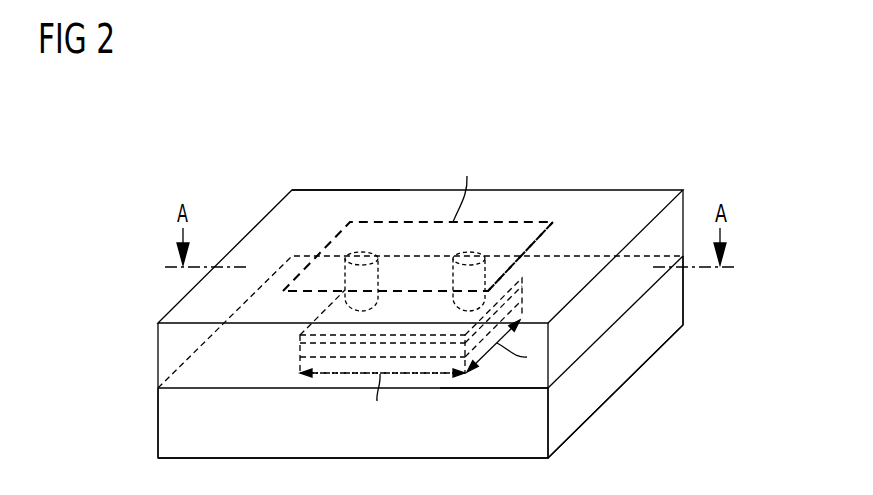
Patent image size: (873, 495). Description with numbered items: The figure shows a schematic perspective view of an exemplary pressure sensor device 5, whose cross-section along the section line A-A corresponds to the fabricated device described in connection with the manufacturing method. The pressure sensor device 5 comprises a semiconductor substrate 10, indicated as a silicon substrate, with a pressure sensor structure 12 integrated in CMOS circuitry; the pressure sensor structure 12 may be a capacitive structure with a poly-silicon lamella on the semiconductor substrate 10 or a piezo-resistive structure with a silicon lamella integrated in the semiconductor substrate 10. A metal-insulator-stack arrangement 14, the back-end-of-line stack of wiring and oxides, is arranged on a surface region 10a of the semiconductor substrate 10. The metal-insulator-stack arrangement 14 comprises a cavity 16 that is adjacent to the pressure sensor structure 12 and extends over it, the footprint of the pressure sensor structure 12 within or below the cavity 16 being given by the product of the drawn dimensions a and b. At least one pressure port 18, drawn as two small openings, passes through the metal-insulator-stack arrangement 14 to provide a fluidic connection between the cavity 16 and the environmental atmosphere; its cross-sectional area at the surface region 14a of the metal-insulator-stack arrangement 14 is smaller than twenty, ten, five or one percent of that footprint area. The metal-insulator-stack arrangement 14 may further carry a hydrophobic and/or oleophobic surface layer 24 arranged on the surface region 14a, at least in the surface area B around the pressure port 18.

The pressure sensor device 5 is at (142, 110).
The semiconductor substrate 10 is at (742, 258).
The surface region of the semiconductor substrate 10a is at (538, 378).
The pressure sensor structure 12 is at (249, 364).
The metal-insulator-stack arrangement 14 is at (186, 296).
The surface region of the metal-insulator-stack arrangement 14a is at (332, 207).
The cavity 16 is at (288, 342).
The pressure port 18 is at (482, 243).
The hydrophobic and/or oleophobic surface layer 24 is at (559, 240).